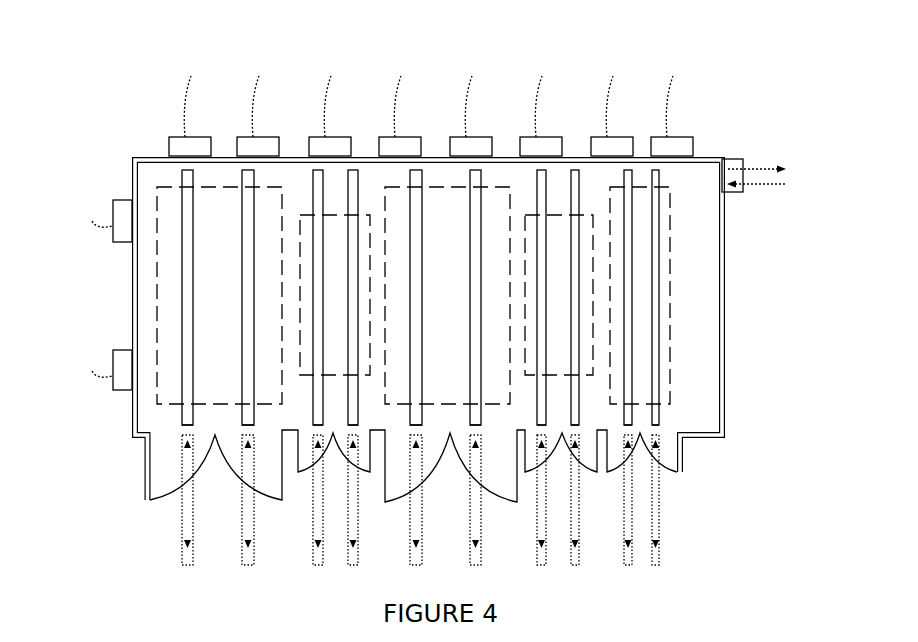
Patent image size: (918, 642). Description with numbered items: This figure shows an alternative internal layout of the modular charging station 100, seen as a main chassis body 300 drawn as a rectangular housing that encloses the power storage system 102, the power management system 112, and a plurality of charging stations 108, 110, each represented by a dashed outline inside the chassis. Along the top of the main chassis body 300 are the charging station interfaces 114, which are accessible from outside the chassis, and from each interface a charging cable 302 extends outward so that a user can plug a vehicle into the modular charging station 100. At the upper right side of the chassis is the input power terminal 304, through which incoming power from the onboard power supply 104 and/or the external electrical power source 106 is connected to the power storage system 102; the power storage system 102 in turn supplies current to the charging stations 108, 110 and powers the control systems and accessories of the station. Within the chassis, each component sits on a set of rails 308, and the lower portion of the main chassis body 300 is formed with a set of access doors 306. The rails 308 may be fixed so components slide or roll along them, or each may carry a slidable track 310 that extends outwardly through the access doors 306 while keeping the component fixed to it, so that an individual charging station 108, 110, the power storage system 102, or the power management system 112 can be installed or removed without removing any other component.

The modular charging station 100 is at (90, 55).
The power storage system 102 is at (528, 215).
The onboard power supply 104 is at (791, 177).
The external electrical power source 106 is at (756, 184).
The charging station 108 is at (172, 187).
The charging station 110 is at (670, 310).
The power management system 112 is at (307, 215).
The charging station interface 114 is at (172, 142).
The main chassis body 300 is at (131, 413).
The charging cable 302 is at (185, 85).
The input power terminal 304 is at (733, 157).
The access door 306 is at (678, 458).
The rail 308 is at (657, 412).
The slidable track 310 is at (653, 500).